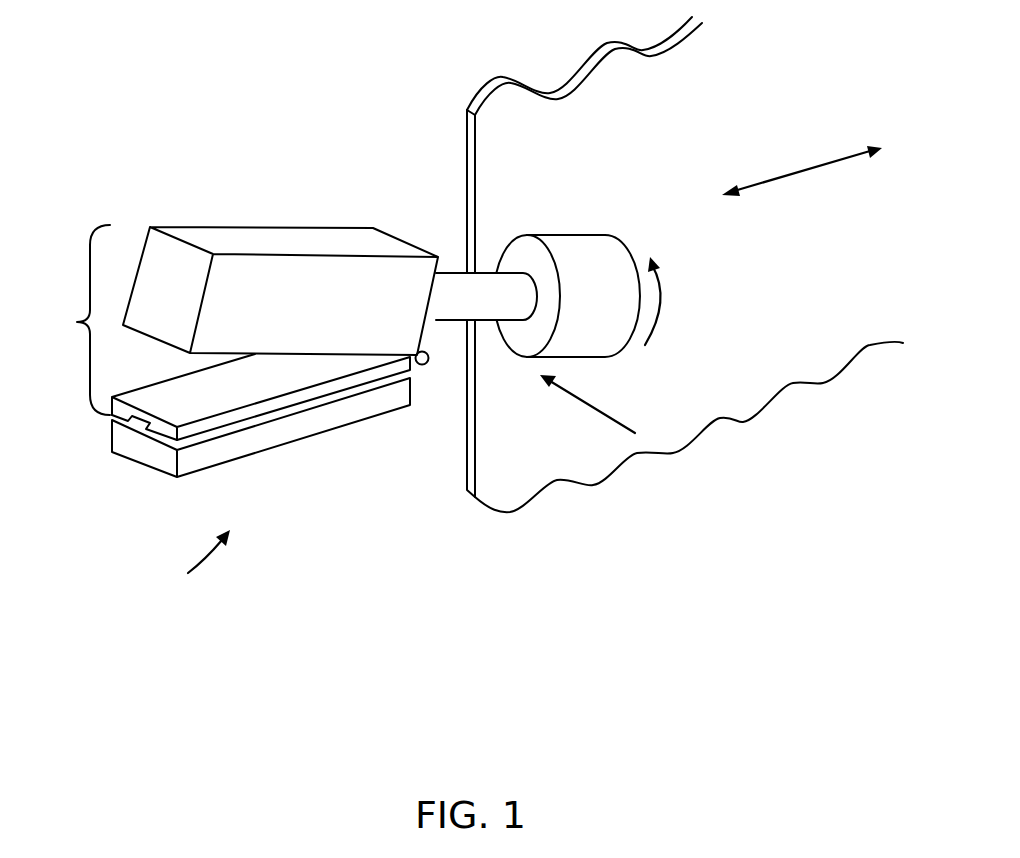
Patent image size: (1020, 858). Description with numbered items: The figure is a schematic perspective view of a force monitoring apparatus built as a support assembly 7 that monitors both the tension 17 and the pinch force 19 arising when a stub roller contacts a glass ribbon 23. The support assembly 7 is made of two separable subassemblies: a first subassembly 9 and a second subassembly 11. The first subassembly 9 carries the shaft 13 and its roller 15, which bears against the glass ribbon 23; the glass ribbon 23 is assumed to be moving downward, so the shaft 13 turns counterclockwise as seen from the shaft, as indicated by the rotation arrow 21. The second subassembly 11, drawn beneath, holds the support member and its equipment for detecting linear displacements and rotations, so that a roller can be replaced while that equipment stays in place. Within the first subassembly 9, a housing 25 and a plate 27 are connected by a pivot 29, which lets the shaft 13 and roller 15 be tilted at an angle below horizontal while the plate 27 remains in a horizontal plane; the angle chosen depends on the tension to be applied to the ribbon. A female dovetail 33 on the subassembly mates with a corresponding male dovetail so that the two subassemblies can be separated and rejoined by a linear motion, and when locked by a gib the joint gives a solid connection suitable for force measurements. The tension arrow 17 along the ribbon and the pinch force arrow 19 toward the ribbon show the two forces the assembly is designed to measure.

The support assembly 7 is at (203, 569).
The first subassembly of support assembly 9 is at (77, 322).
The second subassembly of support assembly 11 is at (253, 440).
The shaft 13 is at (470, 290).
The roller 15 is at (557, 235).
The tension arrow 17 is at (782, 178).
The pinch force arrow 19 is at (593, 398).
The rotation arrow 21 is at (662, 313).
The glass ribbon 23 is at (798, 353).
The housing 25 is at (288, 237).
The plate 27 is at (325, 388).
The pivot 29 is at (427, 365).
The female portion of dovetail 33 is at (136, 431).